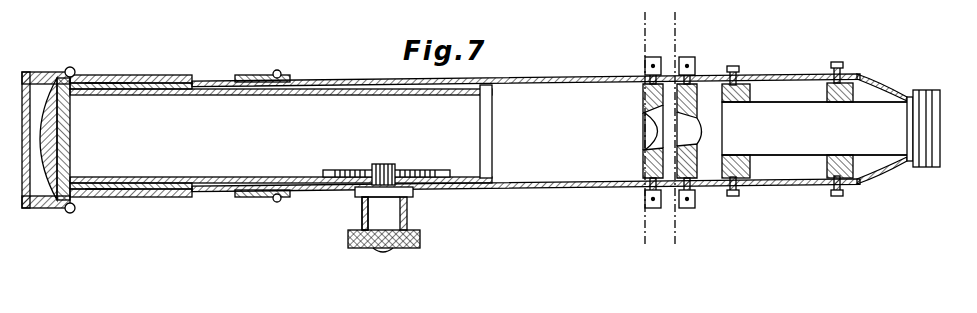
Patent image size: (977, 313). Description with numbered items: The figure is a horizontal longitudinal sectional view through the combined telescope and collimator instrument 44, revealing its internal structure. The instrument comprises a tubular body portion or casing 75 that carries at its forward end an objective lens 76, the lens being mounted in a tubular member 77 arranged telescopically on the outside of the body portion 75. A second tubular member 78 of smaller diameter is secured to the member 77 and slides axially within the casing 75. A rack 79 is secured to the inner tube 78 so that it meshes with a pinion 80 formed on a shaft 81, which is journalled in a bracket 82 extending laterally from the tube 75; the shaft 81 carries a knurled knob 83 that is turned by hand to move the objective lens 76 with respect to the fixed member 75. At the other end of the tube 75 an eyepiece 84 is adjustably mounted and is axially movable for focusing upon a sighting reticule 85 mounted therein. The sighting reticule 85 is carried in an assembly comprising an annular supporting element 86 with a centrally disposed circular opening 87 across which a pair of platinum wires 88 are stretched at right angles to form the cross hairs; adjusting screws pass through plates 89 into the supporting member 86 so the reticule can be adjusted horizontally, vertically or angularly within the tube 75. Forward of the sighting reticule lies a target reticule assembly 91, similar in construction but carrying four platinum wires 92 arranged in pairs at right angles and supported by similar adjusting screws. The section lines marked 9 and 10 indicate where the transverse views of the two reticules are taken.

The instrument 44 is at (549, 74).
The tubular body portion 75 is at (338, 80).
The objective lens 76 is at (60, 140).
The tubular member 77 is at (118, 75).
The second tubular member 78 is at (189, 97).
The rack 79 is at (423, 170).
The pinion 80 is at (385, 167).
The shaft 81 is at (393, 205).
The bracket 82 is at (362, 214).
The knurled knob 83 is at (420, 239).
The eyepiece 84 is at (930, 88).
The sighting reticule 85 is at (707, 112).
The annular supporting element 86 is at (700, 140).
The circular opening 87 is at (690, 118).
The platinum wires 88 is at (702, 128).
The plates 89 is at (690, 70).
The target reticule assembly 91 is at (640, 106).
The platinum wires 92 is at (668, 130).
The section line 9 is at (673, 23).
The section line 10 is at (643, 23).